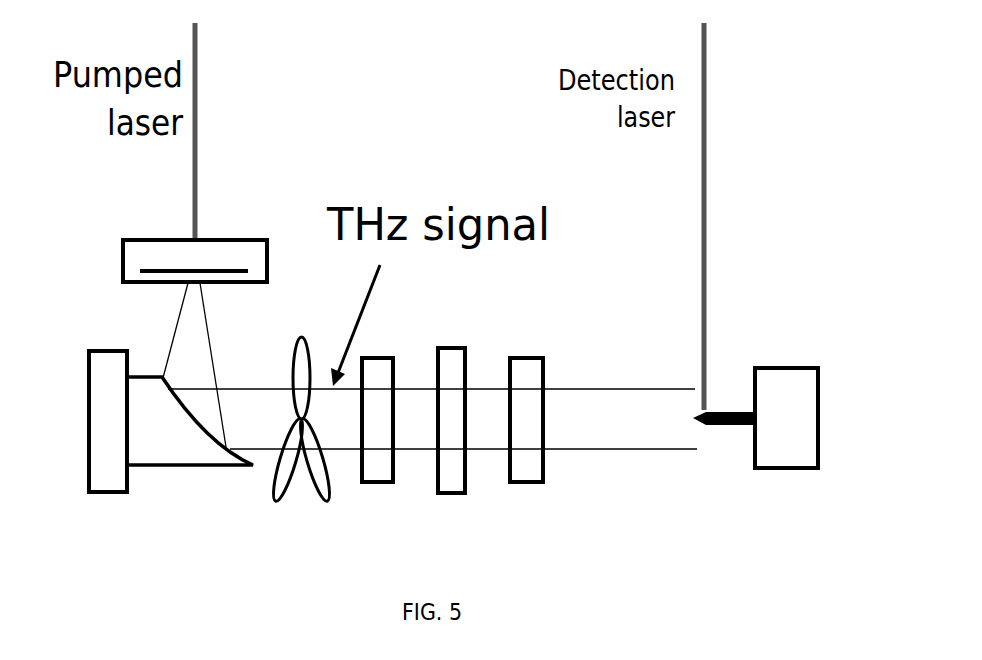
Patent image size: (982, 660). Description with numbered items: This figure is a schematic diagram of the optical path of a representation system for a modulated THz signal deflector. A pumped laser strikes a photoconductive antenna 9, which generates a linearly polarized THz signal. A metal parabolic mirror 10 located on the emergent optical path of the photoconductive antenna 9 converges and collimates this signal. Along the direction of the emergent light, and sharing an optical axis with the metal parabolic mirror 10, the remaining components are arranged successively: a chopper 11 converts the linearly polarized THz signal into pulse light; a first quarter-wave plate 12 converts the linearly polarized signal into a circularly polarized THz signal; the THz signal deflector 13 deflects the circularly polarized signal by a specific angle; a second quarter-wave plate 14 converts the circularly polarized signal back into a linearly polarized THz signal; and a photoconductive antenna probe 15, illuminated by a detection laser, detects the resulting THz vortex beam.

The photoconductive antenna 9 is at (162, 263).
The metal parabolic mirror 10 is at (160, 451).
The chopper 11 is at (256, 461).
The first quarter-wave plate 12 is at (335, 463).
The THz signal deflector 13 is at (408, 462).
The second quarter-wave plate 14 is at (485, 464).
The photoconductive antenna probe 15 is at (753, 462).